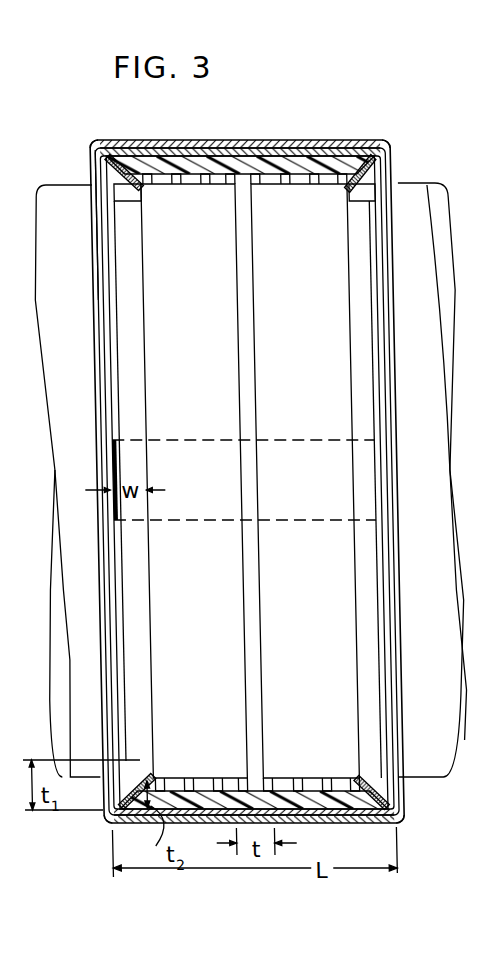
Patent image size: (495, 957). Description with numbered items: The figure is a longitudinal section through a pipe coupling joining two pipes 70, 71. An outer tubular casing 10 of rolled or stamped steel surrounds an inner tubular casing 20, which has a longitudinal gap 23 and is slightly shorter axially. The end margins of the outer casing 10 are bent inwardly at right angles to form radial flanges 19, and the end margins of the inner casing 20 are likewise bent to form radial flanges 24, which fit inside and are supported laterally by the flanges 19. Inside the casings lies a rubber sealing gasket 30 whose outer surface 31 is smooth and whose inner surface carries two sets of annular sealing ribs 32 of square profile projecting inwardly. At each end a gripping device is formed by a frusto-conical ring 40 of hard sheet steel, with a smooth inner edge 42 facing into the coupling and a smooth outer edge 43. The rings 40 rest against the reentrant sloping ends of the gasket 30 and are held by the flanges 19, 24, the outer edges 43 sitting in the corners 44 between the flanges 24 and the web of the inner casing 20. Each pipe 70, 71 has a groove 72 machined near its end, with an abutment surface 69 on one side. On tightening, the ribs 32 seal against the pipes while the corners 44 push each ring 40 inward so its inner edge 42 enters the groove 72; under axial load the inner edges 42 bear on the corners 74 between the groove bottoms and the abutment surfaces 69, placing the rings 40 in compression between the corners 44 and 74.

The outer tubular casing 10 is at (138, 140).
The radial flanges 19 is at (388, 163).
The inner tubular casing 20 is at (337, 148).
The longitudinal gap 23 is at (278, 470).
The radial flanges 24 is at (96, 158).
The sealing gasket 30 is at (300, 165).
The outer surface 31 is at (258, 150).
The annular sealing ribs 32 is at (199, 186).
The frusto-conical ring 40 is at (121, 180).
The inner edge 42 is at (349, 197).
The outer edge 43 is at (378, 141).
The corners 44 is at (92, 150).
The abutment surface 69 is at (139, 193).
The pipe 70 is at (435, 492).
The pipe 71 is at (77, 405).
The groove 72 is at (119, 205).
The corners 74 is at (117, 197).